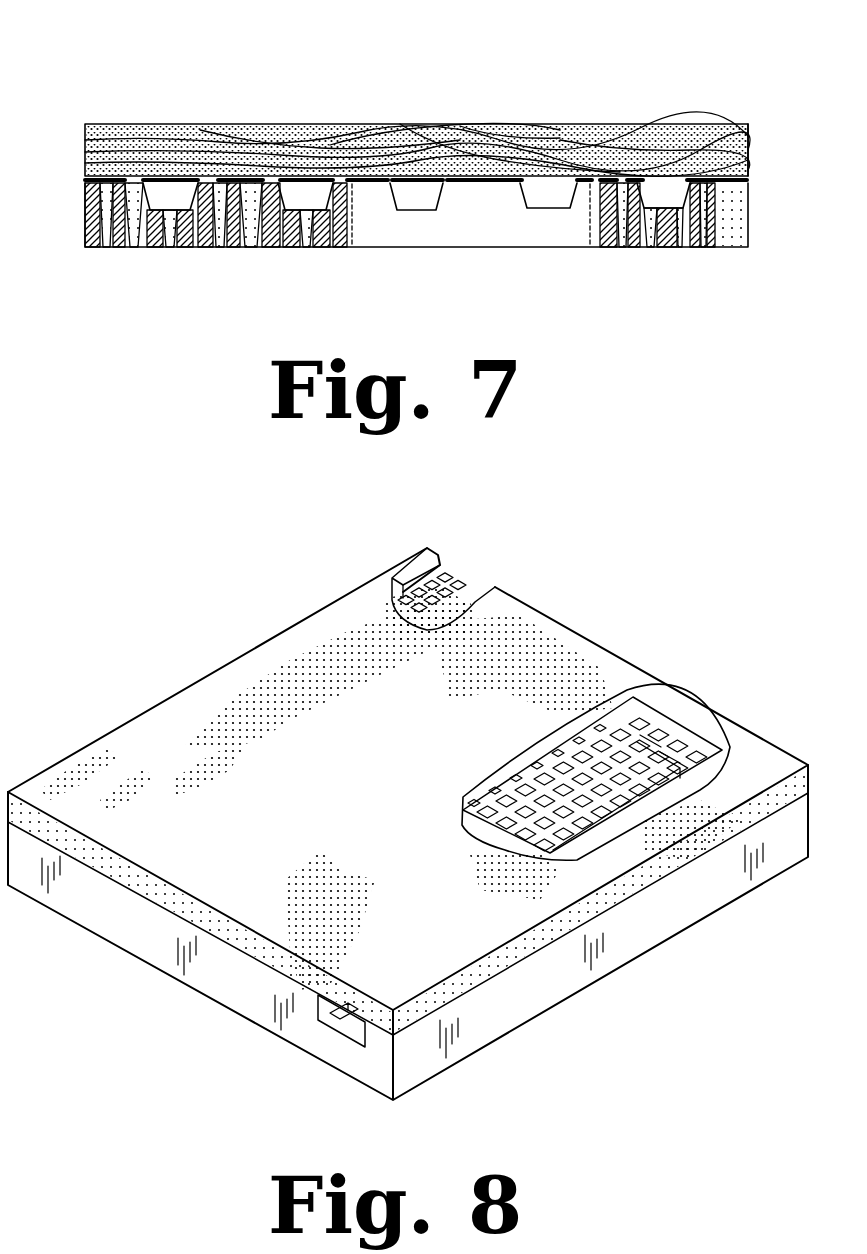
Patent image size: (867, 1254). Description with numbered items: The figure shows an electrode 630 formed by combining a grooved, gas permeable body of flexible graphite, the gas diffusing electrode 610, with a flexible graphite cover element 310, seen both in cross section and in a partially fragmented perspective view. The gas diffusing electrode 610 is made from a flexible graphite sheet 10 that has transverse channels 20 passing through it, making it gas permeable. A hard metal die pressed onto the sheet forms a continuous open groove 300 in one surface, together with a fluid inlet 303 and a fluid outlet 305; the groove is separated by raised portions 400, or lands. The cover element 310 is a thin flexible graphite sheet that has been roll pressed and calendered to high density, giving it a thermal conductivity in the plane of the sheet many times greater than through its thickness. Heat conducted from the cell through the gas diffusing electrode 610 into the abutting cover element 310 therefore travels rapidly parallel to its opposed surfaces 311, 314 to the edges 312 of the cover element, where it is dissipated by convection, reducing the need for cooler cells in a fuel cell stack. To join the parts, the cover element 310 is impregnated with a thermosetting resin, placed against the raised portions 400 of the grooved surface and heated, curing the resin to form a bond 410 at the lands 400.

In FIG. 8, the flexible graphite sheet 10 is at (660, 928).
In FIG. 7, the transverse channels 20 is at (110, 248).
In FIG. 8, the transverse channels 20 is at (643, 753).
In FIG. 7, the open groove 300 is at (170, 190).
In FIG. 8, the open groove 300 is at (627, 702).
In FIG. 8, the fluid inlet 303 is at (462, 582).
In FIG. 8, the fluid outlet 305 is at (333, 1025).
In FIG. 7, the cover element 310 is at (570, 124).
In FIG. 8, the cover element 310 is at (552, 655).
In FIG. 7, the opposed surface 311 is at (456, 124).
In FIG. 7, the edges 312 is at (767, 122).
In FIG. 7, the opposed surface 314 is at (405, 215).
In FIG. 8, the raised portions 400 is at (553, 856).
In FIG. 7, the bond 410 is at (218, 188).
In FIG. 7, the gas diffusing electrode 610 is at (512, 242).
In FIG. 8, the gas diffusing electrode 610 is at (155, 943).
In FIG. 7, the electrode 630 is at (395, 118).
In FIG. 8, the electrode 630 is at (206, 668).